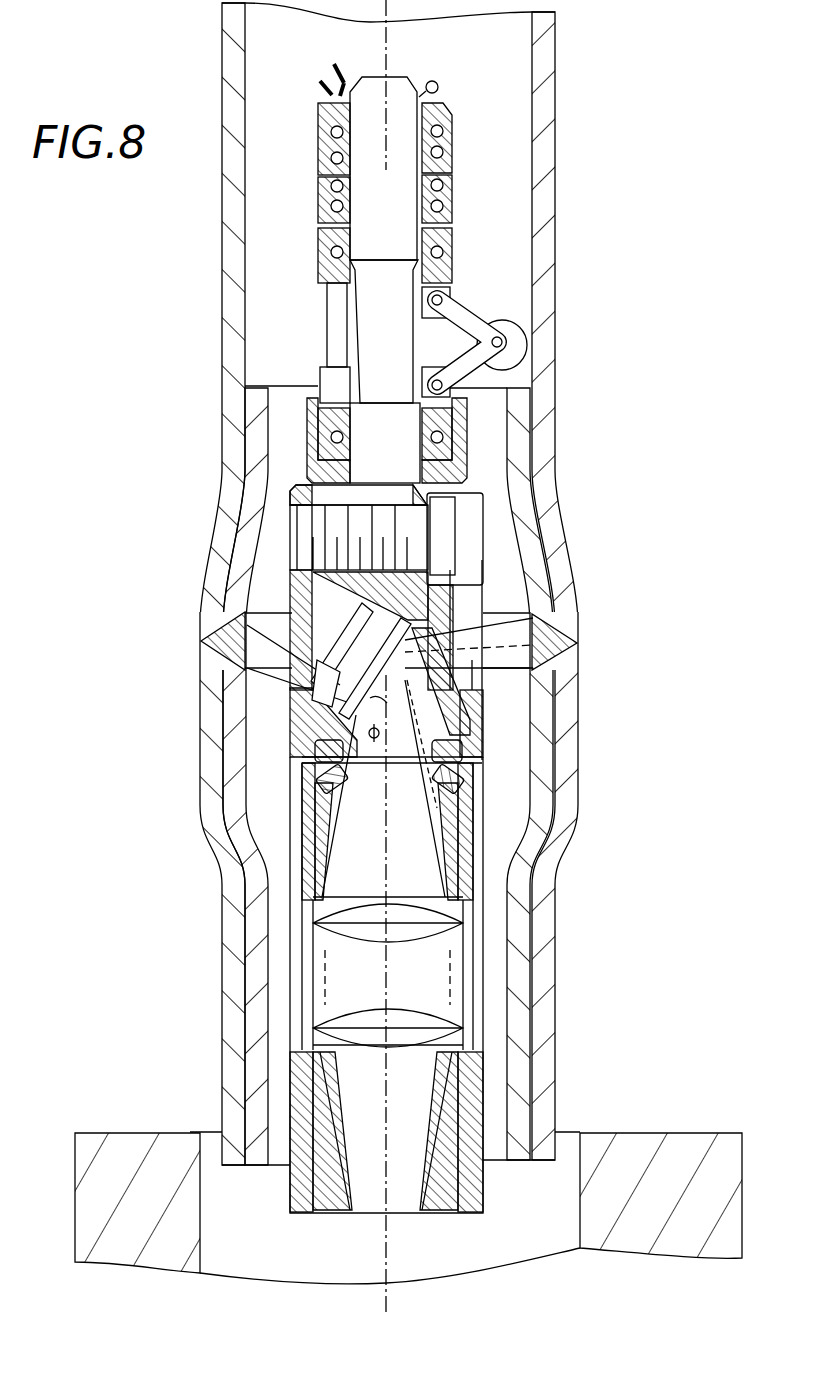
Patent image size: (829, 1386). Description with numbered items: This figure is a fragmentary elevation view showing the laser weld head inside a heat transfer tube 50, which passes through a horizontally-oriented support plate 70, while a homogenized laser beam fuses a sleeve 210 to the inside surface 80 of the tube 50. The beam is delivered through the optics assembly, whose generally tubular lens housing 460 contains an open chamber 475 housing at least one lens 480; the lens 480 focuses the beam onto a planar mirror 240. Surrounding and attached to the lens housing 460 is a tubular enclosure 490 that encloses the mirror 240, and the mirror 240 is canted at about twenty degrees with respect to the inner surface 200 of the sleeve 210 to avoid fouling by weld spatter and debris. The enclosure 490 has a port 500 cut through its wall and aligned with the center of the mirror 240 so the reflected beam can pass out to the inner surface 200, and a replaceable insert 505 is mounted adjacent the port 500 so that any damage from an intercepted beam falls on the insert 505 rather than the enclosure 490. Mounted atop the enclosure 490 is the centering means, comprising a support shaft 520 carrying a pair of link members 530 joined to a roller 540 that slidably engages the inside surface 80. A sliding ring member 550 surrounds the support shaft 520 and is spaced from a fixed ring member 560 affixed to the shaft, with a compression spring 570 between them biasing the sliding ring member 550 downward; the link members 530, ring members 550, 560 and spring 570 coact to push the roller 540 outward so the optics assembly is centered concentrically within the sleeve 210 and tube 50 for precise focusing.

The heat transfer tube 50 is at (545, 125).
The support plate 70 is at (697, 1140).
The inside surface 80 is at (528, 42).
The inner surface 200 is at (505, 400).
The sleeve 210 is at (520, 455).
The planar mirror 240 is at (300, 673).
The lens housing 460 is at (320, 830).
The open chamber 475 is at (435, 824).
The lens 480 is at (345, 1012).
The enclosure 490 is at (300, 603).
The port 500 is at (473, 580).
The replaceable insert 505 is at (535, 620).
The support shaft 520 is at (374, 313).
The link members 530 is at (462, 312).
The roller 540 is at (512, 322).
The sliding ring member 550 is at (318, 203).
The fixed ring member 560 is at (317, 114).
The compression spring 570 is at (442, 153).